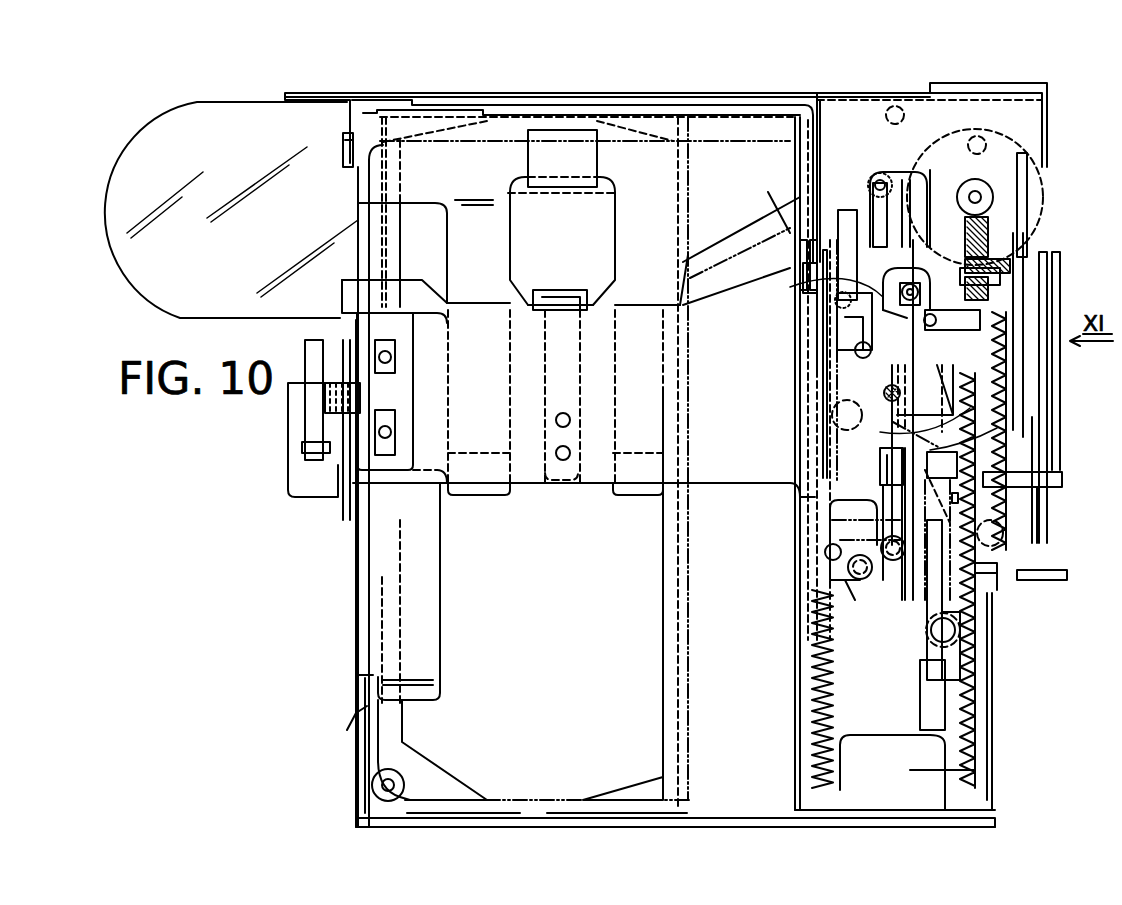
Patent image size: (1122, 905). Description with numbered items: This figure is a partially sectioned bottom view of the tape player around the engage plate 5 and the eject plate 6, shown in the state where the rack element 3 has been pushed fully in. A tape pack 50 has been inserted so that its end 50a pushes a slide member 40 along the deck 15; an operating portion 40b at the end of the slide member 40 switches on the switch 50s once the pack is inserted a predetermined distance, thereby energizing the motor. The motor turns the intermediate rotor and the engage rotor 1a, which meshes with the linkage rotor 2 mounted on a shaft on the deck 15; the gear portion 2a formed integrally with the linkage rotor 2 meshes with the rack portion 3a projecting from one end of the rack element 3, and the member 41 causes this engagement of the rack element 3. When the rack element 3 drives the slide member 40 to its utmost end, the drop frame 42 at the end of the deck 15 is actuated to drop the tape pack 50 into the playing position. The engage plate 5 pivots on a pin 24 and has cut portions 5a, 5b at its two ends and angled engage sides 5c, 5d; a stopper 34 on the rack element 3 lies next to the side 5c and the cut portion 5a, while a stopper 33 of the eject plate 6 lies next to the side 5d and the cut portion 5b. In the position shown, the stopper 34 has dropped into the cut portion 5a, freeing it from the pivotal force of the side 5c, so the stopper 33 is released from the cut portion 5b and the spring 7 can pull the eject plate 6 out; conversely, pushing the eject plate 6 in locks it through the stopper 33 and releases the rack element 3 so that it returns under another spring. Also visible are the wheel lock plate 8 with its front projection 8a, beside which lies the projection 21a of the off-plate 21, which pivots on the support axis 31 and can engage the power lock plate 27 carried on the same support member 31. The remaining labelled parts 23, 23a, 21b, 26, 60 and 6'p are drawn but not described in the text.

The end of the tape pack 50a is at (566, 145).
The cam plate 23a is at (918, 200).
The carriage plate 23 is at (880, 207).
The rack portion 3a is at (1027, 158).
The engage rotor 1a is at (998, 192).
The linkage rotor 2 is at (987, 233).
The gear portion 2a is at (963, 262).
The pin 6'p is at (760, 199).
The drop frame 42 is at (741, 251).
The pin 24 is at (790, 293).
The cut portion 5a is at (935, 307).
The cut portion 5b is at (903, 317).
The engage side 5d is at (890, 368).
The engage plate 5 is at (923, 387).
The stopper 33 is at (883, 395).
The stopper 34 is at (935, 325).
The engage side 5c is at (978, 431).
The rack element 3 is at (1013, 392).
The off-plate 21 is at (957, 433).
The slider arm 21b is at (907, 463).
The wheel lock plate 8 is at (1057, 428).
The projection 8a is at (1062, 467).
The projection 21a is at (1063, 484).
The support axis 31 is at (975, 522).
The power lock plate 27 is at (1017, 527).
The member 41 is at (827, 530).
The roller 26 is at (945, 630).
The eject plate 6 is at (993, 591).
The spring 7 is at (817, 733).
The tape pack 50 is at (710, 797).
The base bracket 60 is at (977, 798).
The deck 15 is at (722, 818).
The slide member 40 is at (590, 484).
The operating portion 40b is at (313, 398).
The switch 50s is at (297, 475).